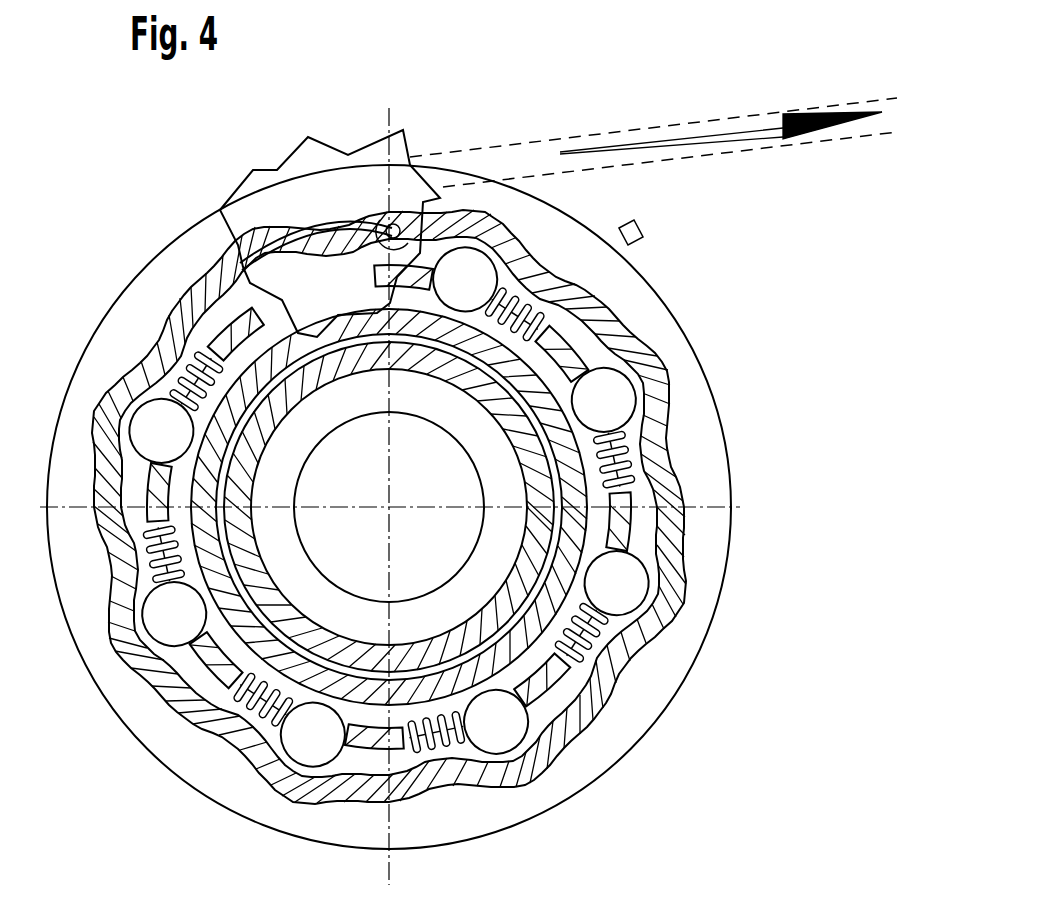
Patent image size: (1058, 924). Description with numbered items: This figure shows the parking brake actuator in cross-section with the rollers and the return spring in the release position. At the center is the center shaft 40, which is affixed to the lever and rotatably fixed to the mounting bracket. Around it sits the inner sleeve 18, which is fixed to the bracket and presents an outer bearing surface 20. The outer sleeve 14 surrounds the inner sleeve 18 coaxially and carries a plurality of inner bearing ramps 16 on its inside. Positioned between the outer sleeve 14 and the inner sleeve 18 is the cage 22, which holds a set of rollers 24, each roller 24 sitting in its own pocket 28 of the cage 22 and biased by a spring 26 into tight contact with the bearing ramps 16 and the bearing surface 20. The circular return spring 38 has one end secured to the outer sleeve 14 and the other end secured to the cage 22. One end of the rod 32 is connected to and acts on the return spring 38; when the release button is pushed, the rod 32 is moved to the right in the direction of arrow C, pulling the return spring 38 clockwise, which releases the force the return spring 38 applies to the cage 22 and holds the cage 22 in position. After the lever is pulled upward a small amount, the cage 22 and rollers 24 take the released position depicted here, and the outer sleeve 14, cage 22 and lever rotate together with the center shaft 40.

The outer sleeve 14 is at (605, 316).
The inner bearing ramps 16 is at (600, 352).
The inner sleeve 18 is at (588, 470).
The outer bearing surface 20 is at (596, 524).
The cage 22 is at (622, 533).
The rollers 24 is at (600, 402).
The spring 26 is at (616, 700).
The pocket 28 is at (500, 707).
The rod 32 is at (583, 133).
The return spring 38 is at (300, 243).
The center shaft 40 is at (447, 484).
The arrow C is at (718, 133).